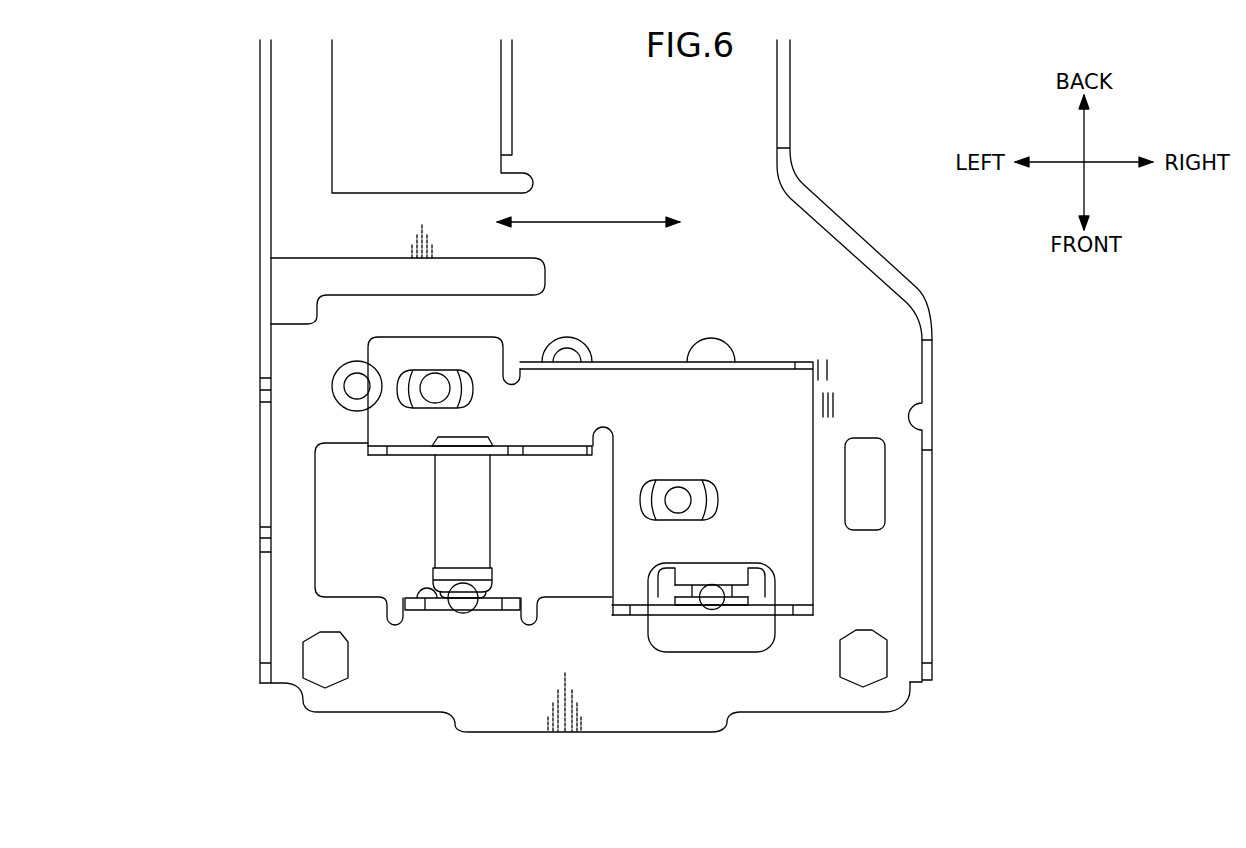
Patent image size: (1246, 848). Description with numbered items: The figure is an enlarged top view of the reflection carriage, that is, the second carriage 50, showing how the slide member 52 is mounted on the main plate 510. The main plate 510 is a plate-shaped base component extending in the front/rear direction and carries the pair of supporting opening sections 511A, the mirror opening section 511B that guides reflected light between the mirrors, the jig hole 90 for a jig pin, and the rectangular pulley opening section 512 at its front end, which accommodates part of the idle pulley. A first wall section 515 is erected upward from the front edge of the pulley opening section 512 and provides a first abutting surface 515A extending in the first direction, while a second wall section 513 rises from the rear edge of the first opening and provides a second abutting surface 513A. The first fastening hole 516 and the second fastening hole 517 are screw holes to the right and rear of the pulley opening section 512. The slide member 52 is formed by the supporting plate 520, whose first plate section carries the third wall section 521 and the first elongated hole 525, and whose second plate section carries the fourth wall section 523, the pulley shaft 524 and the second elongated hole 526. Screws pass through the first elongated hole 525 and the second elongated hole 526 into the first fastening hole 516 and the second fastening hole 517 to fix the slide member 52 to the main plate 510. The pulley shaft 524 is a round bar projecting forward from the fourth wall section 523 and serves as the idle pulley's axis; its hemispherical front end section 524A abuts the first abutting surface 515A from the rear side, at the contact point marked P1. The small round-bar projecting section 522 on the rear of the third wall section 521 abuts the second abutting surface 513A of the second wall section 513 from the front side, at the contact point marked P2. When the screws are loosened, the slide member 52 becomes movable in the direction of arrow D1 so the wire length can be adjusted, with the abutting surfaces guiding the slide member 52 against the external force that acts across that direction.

The second carriage 50 is at (950, 467).
The slide member 52 is at (768, 357).
The jig hole 90 is at (863, 510).
The main plate 510 is at (848, 303).
The supporting opening sections 511A is at (313, 273).
The mirror opening section 511B is at (347, 138).
The pulley opening section 512 is at (333, 540).
The second wall section 513 is at (745, 592).
The second abutting surface 513A is at (680, 598).
The first wall section 515 is at (492, 603).
The first abutting surface 515A is at (422, 587).
The first fastening hole 516 is at (700, 490).
The second fastening hole 517 is at (417, 380).
The supporting plate 520 is at (780, 405).
The third wall section 521 is at (783, 612).
The projecting section 522 is at (728, 607).
The fourth wall section 523 is at (545, 448).
The pulley shaft 524 is at (448, 503).
The front end section 524A is at (462, 597).
The first elongated hole 525 is at (718, 510).
The second elongated hole 526 is at (393, 402).
The contact point P1 is at (453, 613).
The contact point P2 is at (707, 605).
The arrow D1 is at (593, 220).